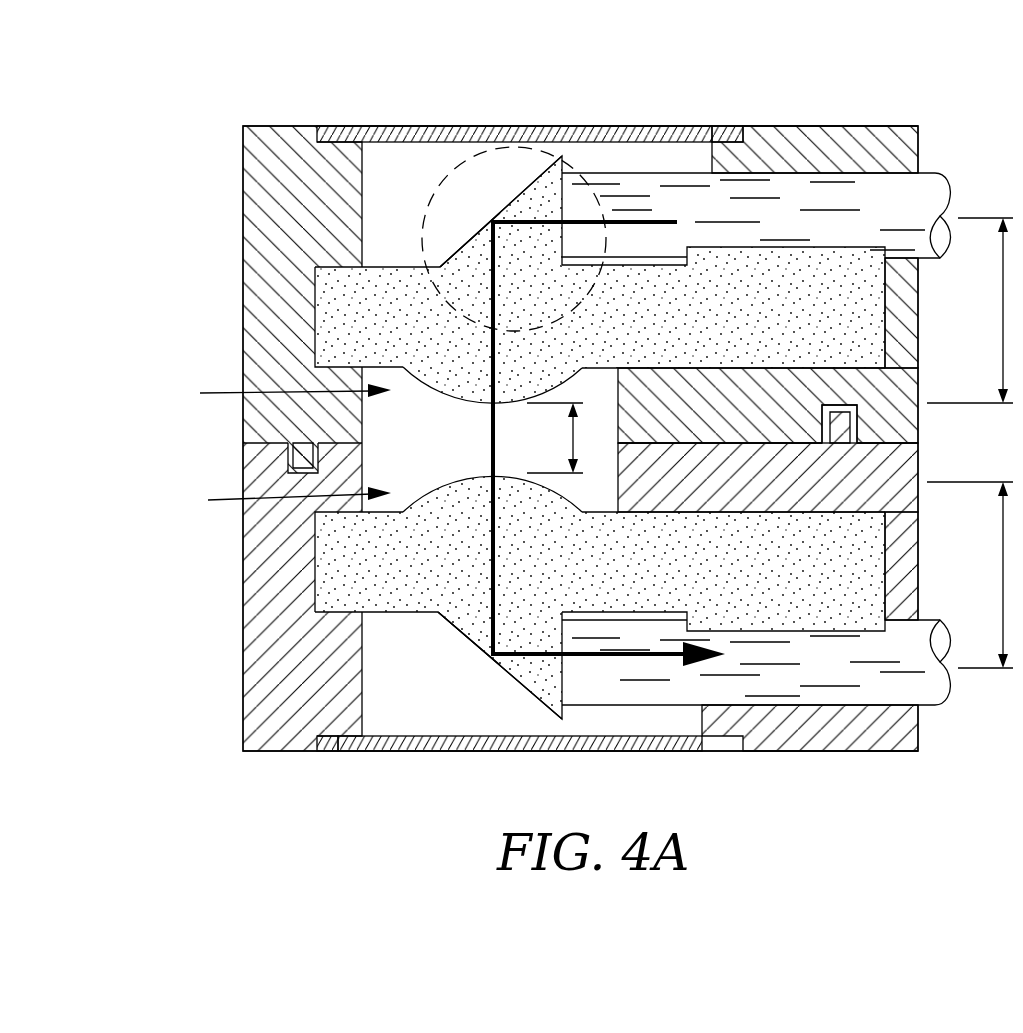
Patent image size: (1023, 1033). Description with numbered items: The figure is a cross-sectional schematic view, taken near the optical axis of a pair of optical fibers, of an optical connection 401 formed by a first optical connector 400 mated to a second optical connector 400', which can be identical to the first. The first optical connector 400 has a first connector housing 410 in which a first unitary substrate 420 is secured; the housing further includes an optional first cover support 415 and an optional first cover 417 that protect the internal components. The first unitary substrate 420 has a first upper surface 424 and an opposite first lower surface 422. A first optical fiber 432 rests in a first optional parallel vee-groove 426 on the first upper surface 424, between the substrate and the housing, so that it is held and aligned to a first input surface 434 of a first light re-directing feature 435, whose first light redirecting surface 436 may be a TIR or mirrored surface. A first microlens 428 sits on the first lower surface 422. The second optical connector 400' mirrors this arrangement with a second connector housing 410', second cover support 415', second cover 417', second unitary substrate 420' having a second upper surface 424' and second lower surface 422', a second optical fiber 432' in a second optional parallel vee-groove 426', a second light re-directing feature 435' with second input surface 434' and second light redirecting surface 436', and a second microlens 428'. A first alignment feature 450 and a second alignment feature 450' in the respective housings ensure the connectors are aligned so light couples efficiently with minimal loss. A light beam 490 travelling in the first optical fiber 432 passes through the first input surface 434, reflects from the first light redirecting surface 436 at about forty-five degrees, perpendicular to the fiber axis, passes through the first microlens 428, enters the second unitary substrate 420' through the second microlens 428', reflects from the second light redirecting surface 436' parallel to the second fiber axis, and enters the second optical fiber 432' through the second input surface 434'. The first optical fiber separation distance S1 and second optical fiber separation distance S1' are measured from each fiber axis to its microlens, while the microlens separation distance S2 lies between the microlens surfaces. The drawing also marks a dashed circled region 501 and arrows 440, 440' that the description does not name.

The optical connection 401 is at (165, 106).
The first optical connector 400 is at (554, 251).
The second optical connector 400' is at (535, 624).
The first connector housing 410 is at (815, 127).
The second connector housing 410' is at (810, 754).
The first cover support 415 is at (732, 112).
The second cover support 415' is at (333, 769).
The first cover 417 is at (514, 110).
The second cover 417' is at (520, 769).
The first unitary substrate 420 is at (531, 279).
The second unitary substrate 420' is at (531, 597).
The first lower surface 422 is at (733, 352).
The second lower surface 422' is at (733, 536).
The first upper surface 424 is at (377, 239).
The second upper surface 424' is at (376, 641).
The first optional parallel vee-groove 426 is at (723, 307).
The second optional parallel vee-groove 426' is at (723, 571).
The first microlens 428 is at (481, 396).
The second microlens 428' is at (481, 483).
The first optical fiber 432 is at (771, 203).
The second optical fiber 432' is at (781, 679).
The first input surface 434 is at (533, 176).
The second input surface 434' is at (533, 703).
The first light re-directing feature 435 is at (501, 173).
The second light re-directing feature 435' is at (500, 703).
The first light redirecting surface 436 is at (470, 222).
The second light redirecting surface 436' is at (466, 655).
The upper actuation direction 440 is at (275, 396).
The lower actuation direction 440' is at (275, 501).
The first alignment feature 450 is at (238, 458).
The second alignment feature 450' is at (911, 428).
The light beam 490 is at (655, 220).
The detail region 501 is at (466, 156).
The first optical fiber separation distance S1 is at (972, 310).
The second optical fiber separation distance S1' is at (974, 575).
The microlens separation distance S2 is at (555, 438).